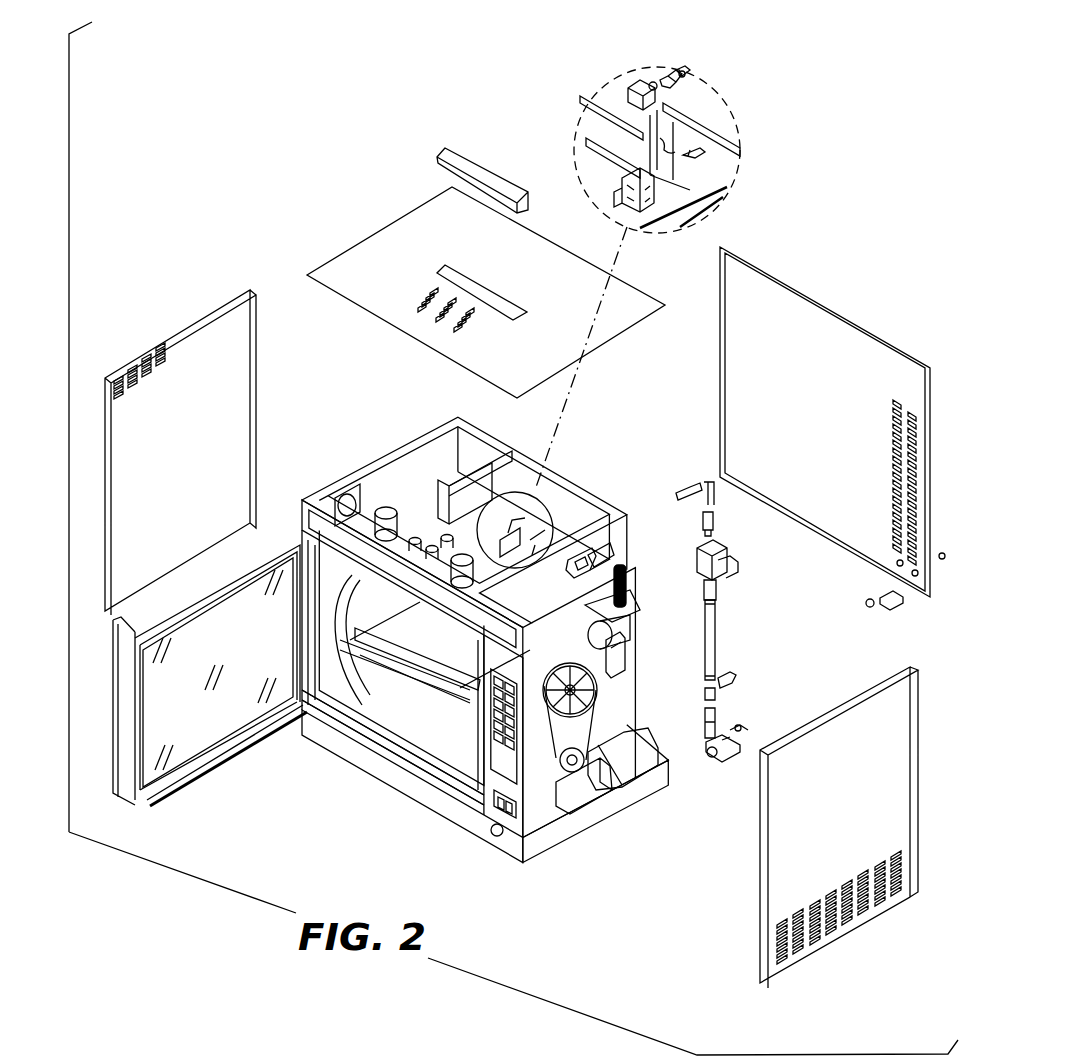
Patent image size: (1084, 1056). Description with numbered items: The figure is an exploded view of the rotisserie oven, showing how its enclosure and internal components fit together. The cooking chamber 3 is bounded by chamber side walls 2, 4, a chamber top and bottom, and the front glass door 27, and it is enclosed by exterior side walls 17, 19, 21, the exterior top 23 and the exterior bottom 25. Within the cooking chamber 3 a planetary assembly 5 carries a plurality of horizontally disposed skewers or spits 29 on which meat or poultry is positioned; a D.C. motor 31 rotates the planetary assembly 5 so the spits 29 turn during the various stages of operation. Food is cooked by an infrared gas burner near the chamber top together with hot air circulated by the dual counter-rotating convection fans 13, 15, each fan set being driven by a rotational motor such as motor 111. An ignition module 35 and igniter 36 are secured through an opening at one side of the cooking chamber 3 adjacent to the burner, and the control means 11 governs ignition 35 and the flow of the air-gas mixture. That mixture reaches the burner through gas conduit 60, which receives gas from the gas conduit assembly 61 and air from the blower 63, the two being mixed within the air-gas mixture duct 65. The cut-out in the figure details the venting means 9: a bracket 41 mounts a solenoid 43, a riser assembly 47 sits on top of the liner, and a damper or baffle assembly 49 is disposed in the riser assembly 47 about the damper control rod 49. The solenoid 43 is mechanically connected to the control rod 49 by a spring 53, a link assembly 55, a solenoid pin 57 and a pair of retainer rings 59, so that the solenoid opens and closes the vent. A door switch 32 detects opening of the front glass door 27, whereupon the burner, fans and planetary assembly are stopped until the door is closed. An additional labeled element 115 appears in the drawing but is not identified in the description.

The chamber side wall 2 is at (318, 638).
The cooking chamber 3 is at (414, 737).
The chamber side wall 4 is at (484, 666).
The planetary assembly 5 is at (357, 596).
The venting means 9 is at (466, 488).
The control means 11 is at (491, 738).
The convection fan 13 is at (385, 508).
The convection fan 15 is at (466, 552).
The exterior side wall 17 is at (908, 770).
The exterior side wall 19 is at (877, 340).
The exterior side wall 21 is at (250, 410).
The exterior top 23 is at (400, 218).
The exterior bottom 25 is at (548, 838).
The front glass door 27 is at (128, 704).
The skewers or spits 29 is at (378, 681).
The D.C. motor 31 is at (612, 765).
The door switch 32 is at (486, 792).
The ignition module 35 is at (625, 668).
The igniter 36 is at (580, 566).
The bracket 41 is at (620, 186).
The solenoid 43 is at (620, 84).
The riser assembly 47 is at (447, 490).
The damper or baffle assembly 49 is at (660, 143).
The spring 53 is at (696, 156).
The link assembly 55 is at (666, 78).
The solenoid pin 57 is at (676, 92).
The retainer rings 59 is at (640, 80).
The gas conduit 60 is at (628, 525).
The gas conduit assembly 61 is at (722, 634).
The blower 63 is at (612, 632).
The air-gas mixture duct 65 is at (628, 595).
The rotational motor 111 is at (356, 494).
The cylinder component 115 is at (448, 622).